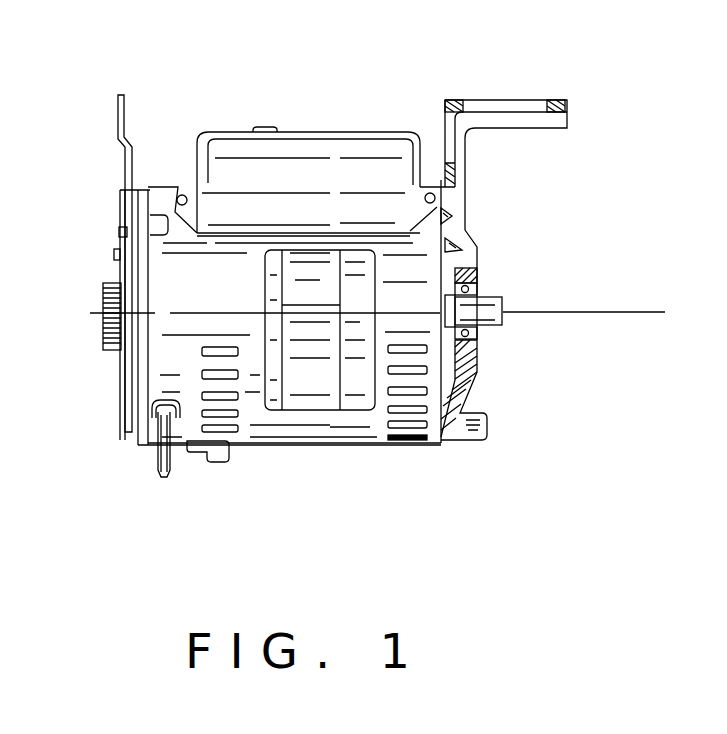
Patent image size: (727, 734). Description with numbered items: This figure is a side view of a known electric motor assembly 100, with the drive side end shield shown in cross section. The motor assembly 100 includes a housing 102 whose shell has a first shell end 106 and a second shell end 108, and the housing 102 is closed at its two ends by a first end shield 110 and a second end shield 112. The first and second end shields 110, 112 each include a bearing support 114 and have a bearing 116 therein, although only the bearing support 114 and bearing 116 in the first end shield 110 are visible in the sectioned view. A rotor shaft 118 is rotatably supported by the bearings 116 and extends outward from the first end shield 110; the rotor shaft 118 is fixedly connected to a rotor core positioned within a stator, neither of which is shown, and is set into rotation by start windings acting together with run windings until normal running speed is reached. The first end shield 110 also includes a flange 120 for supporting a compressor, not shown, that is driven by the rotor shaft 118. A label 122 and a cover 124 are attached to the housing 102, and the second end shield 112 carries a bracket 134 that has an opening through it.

The electric motor assembly 100 is at (352, 86).
The housing 102 is at (297, 470).
The first shell end 106 is at (435, 450).
The second shell end 108 is at (180, 450).
The first end shield 110 is at (482, 386).
The second end shield 112 is at (122, 423).
The bearing support 114 is at (480, 348).
The bearing 116 is at (482, 285).
The rotor shaft 118 is at (490, 320).
The flange 120 is at (494, 94).
The label 122 is at (322, 412).
The cover 124 is at (205, 207).
The bracket 134 is at (125, 163).